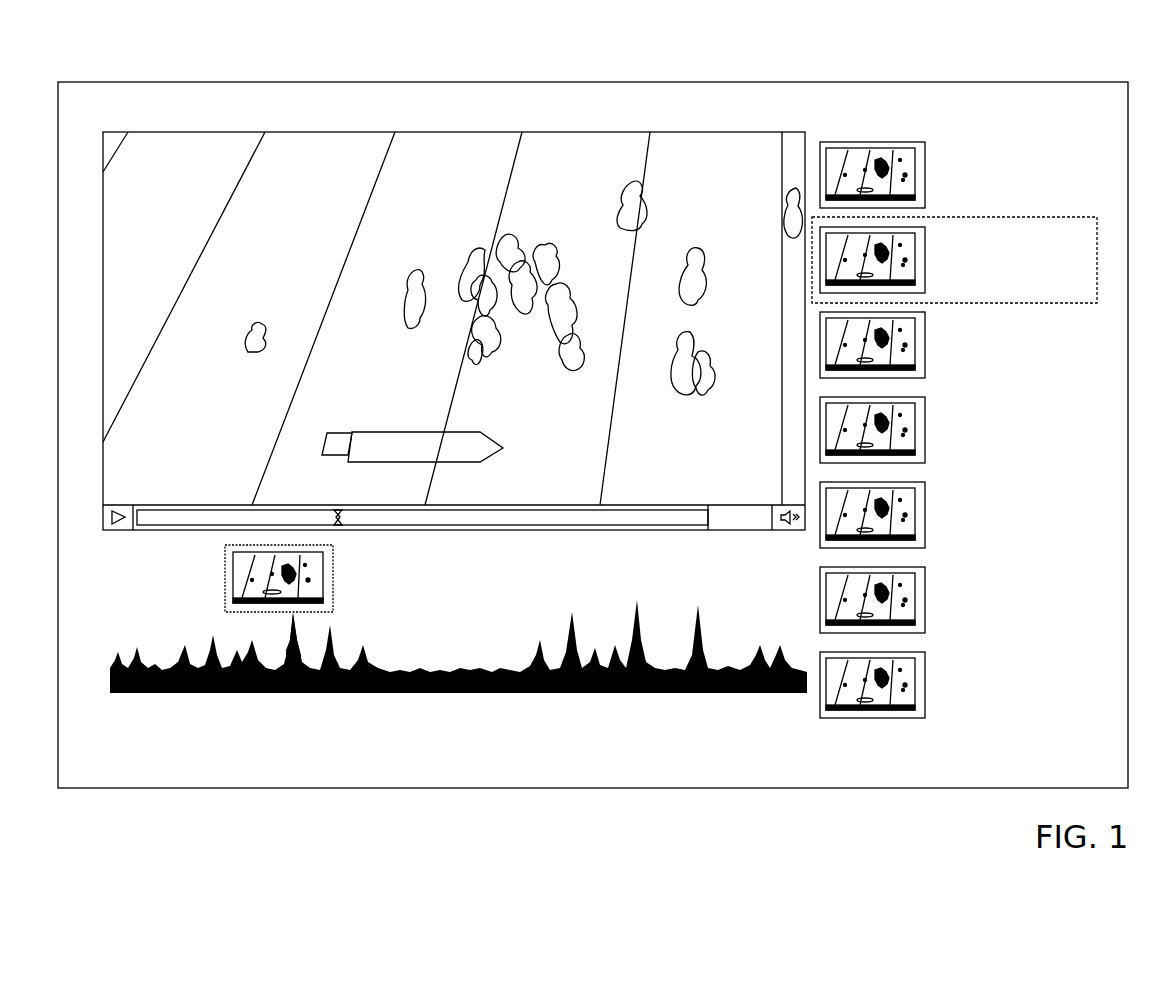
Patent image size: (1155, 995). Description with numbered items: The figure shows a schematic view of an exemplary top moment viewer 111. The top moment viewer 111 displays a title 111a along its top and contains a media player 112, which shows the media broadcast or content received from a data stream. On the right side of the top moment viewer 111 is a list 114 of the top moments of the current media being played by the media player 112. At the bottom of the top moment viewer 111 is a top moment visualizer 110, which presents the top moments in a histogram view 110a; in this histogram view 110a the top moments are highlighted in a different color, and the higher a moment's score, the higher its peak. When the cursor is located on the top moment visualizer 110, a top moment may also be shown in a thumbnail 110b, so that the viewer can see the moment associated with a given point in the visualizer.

The top moment visualizer 110 is at (447, 676).
The histogram view 110a is at (298, 693).
The thumbnail 110b is at (333, 576).
The top moment viewer 111 is at (298, 82).
The title 111a is at (397, 132).
The media player 112 is at (698, 315).
The list 114 is at (1022, 217).